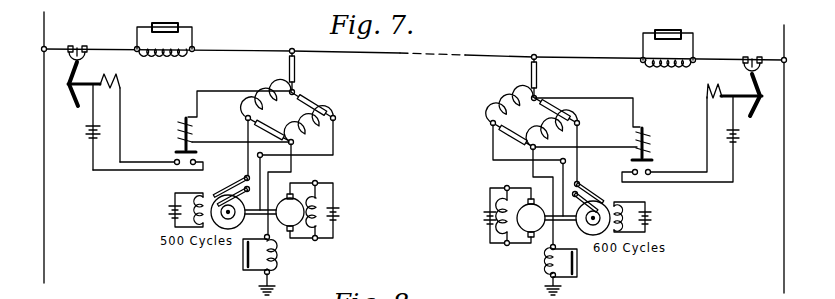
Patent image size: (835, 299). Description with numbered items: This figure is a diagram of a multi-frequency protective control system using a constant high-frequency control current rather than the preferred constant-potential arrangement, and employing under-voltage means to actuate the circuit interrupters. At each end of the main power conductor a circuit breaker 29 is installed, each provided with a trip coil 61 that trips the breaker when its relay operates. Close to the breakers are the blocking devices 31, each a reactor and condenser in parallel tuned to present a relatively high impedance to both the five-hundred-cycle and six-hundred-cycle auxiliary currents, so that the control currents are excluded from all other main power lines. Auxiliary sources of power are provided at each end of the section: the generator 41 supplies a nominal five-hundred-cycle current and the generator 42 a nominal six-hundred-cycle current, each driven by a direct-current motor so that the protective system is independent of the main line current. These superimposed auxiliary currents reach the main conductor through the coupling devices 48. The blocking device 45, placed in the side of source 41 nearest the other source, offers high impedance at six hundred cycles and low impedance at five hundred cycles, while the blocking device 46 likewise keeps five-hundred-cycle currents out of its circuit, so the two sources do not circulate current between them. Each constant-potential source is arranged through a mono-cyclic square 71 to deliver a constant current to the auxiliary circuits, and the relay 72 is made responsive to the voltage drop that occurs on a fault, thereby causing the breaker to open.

The circuit breaker 29 is at (77, 48).
The blocking device 31 is at (180, 35).
The coupling device 48 is at (296, 70).
The trip coil 61 is at (121, 90).
The mono-cyclic square 71 is at (306, 130).
The relay 72 is at (178, 129).
The auxiliary source of power 41 is at (218, 202).
The auxiliary source of power 42 is at (605, 207).
The blocking device 45 is at (270, 267).
The blocking device 46 is at (563, 270).